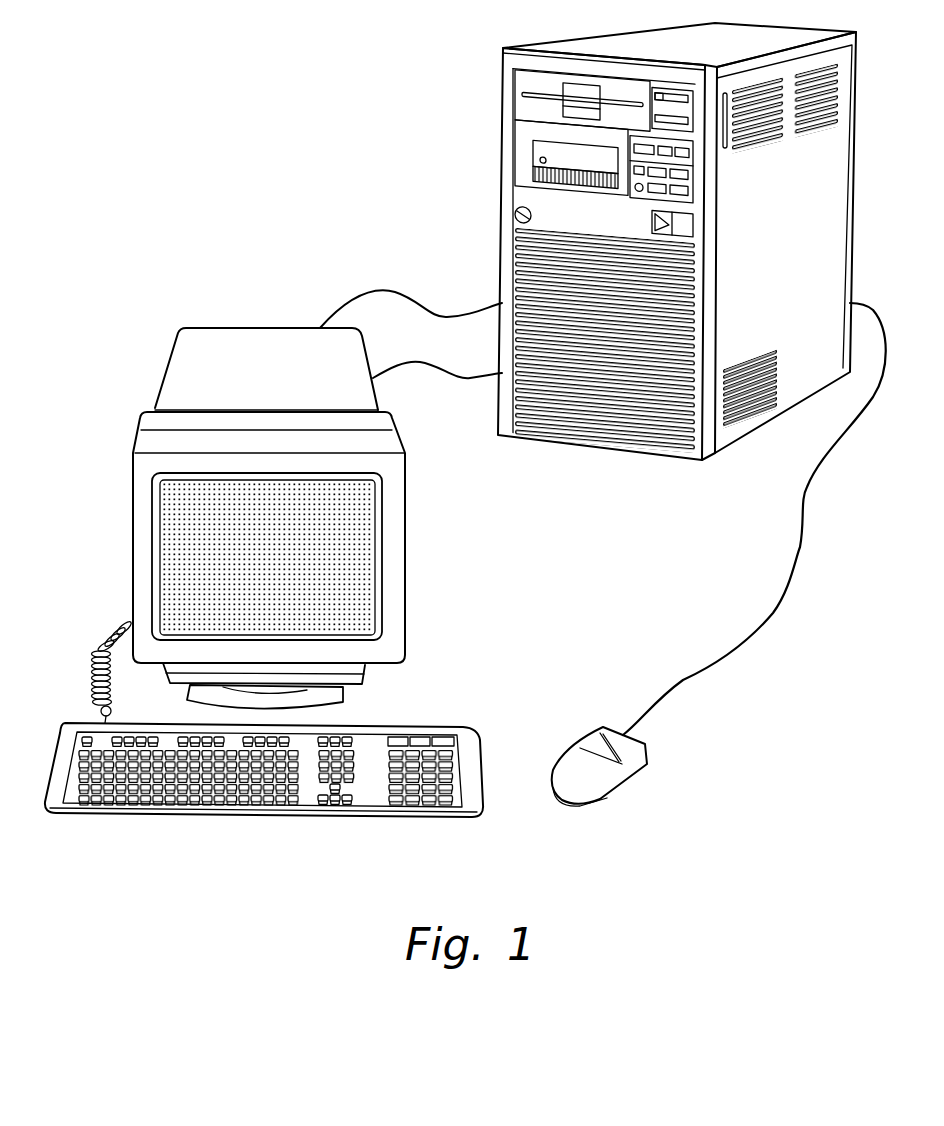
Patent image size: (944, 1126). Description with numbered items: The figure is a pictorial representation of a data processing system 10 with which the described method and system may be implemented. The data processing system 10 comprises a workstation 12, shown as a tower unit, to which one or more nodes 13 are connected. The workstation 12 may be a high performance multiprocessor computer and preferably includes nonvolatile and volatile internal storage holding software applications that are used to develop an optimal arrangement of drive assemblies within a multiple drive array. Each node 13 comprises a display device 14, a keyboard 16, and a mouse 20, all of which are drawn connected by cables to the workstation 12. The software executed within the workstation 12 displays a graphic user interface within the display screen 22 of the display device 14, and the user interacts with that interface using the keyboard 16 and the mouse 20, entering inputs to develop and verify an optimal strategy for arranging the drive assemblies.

The data processing system 10 is at (296, 195).
The workstation 12 is at (513, 194).
The node 13 is at (254, 500).
The display device 14 is at (268, 340).
The keyboard 16 is at (248, 819).
The mouse 20 is at (622, 770).
The display screen 22 is at (354, 564).